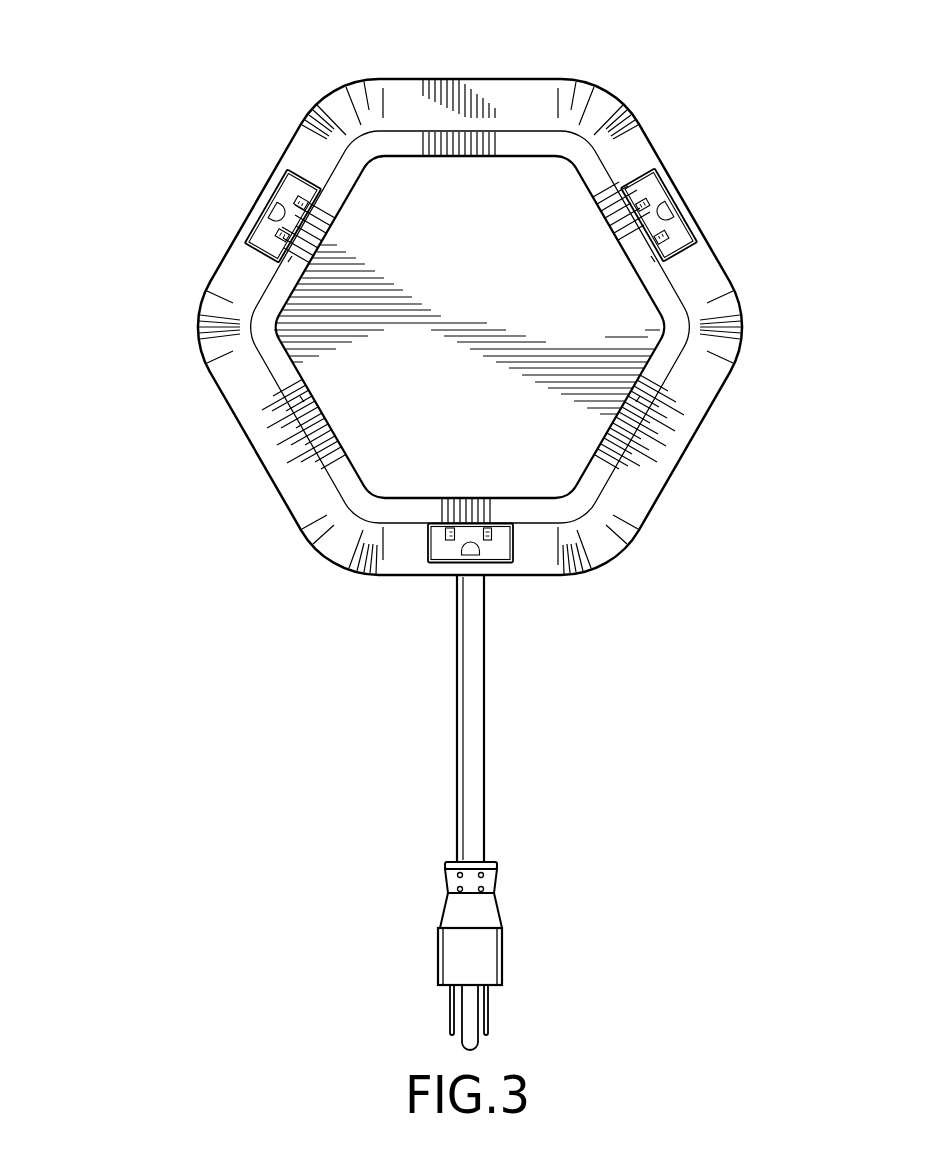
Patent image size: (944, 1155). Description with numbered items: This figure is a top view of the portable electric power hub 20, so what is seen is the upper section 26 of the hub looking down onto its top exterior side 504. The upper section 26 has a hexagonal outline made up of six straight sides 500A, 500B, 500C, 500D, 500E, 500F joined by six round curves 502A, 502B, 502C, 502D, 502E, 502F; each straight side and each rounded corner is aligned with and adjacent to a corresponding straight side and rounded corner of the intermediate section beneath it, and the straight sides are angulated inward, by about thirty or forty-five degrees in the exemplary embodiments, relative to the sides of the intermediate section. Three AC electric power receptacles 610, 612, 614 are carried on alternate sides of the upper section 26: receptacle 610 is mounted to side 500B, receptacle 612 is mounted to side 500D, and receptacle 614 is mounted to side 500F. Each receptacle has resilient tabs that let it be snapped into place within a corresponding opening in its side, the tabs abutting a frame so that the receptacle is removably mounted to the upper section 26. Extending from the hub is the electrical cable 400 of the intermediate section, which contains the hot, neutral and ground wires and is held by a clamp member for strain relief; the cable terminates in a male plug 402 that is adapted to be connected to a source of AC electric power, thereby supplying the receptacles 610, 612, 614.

The portable electric power hub 20 is at (123, 204).
The upper section 26 is at (633, 147).
The straight side 500A is at (695, 398).
The straight side 500B is at (695, 232).
The straight side 500C is at (490, 97).
The straight side 500D is at (297, 153).
The straight side 500E is at (247, 398).
The straight side 500F is at (540, 567).
The round curve 502A is at (610, 543).
The round curve 502B is at (718, 297).
The round curve 502C is at (612, 107).
The round curve 502D is at (356, 97).
The round curve 502E is at (217, 298).
The round curve 502F is at (356, 555).
The top exterior side 504 is at (600, 313).
The AC electric power receptacle 610 is at (660, 198).
The AC electric power receptacle 612 is at (283, 197).
The AC electric power receptacle 614 is at (443, 555).
The electrical cable 400 is at (487, 735).
The male plug 402 is at (503, 958).